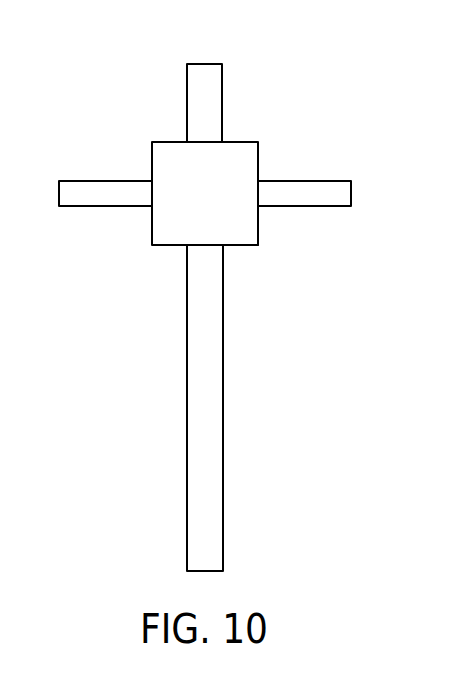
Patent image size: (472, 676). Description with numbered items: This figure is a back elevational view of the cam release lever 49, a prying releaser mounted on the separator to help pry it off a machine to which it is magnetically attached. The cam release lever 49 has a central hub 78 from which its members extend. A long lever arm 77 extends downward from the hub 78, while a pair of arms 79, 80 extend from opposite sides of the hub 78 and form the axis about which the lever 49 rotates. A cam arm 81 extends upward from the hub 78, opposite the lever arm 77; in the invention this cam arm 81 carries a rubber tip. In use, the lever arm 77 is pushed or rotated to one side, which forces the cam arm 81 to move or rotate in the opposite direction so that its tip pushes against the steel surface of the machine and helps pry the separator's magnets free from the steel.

The cam release lever 49 is at (150, 231).
The lever arm 77 is at (187, 432).
The hub 78 is at (258, 232).
The arm 79 is at (87, 180).
The arm 80 is at (317, 180).
The cam arm 81 is at (223, 92).